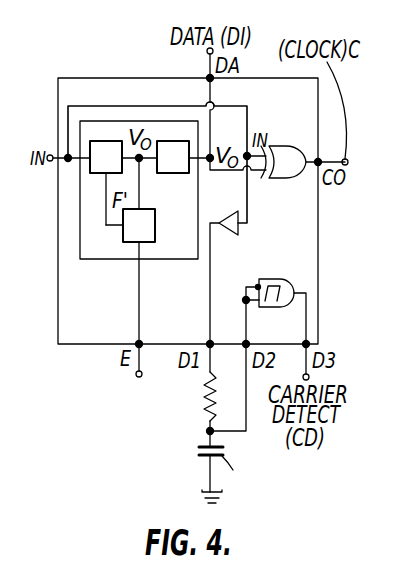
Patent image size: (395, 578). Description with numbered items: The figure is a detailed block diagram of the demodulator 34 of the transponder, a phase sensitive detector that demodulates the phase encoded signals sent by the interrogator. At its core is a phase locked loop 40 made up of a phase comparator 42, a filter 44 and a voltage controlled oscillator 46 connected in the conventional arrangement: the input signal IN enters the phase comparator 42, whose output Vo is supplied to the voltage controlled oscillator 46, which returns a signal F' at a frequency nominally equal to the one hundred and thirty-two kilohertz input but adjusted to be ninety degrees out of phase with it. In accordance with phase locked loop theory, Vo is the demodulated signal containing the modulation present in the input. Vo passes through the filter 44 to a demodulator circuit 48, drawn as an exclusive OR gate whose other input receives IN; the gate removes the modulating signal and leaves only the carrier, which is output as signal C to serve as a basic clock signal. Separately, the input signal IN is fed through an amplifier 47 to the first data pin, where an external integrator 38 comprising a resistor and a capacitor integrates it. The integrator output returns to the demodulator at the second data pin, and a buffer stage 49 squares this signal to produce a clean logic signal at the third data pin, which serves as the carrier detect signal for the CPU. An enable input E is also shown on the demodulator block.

The demodulator 34 is at (88, 358).
The external integrator 38 is at (200, 425).
The phase locked loop 40 is at (80, 199).
The phase comparator 42 is at (104, 146).
The filter 44 is at (172, 146).
The voltage controlled oscillator 46 is at (133, 242).
The amplifier 47 is at (237, 232).
The demodulator circuit 48 is at (286, 146).
The buffer stage 49 is at (276, 282).